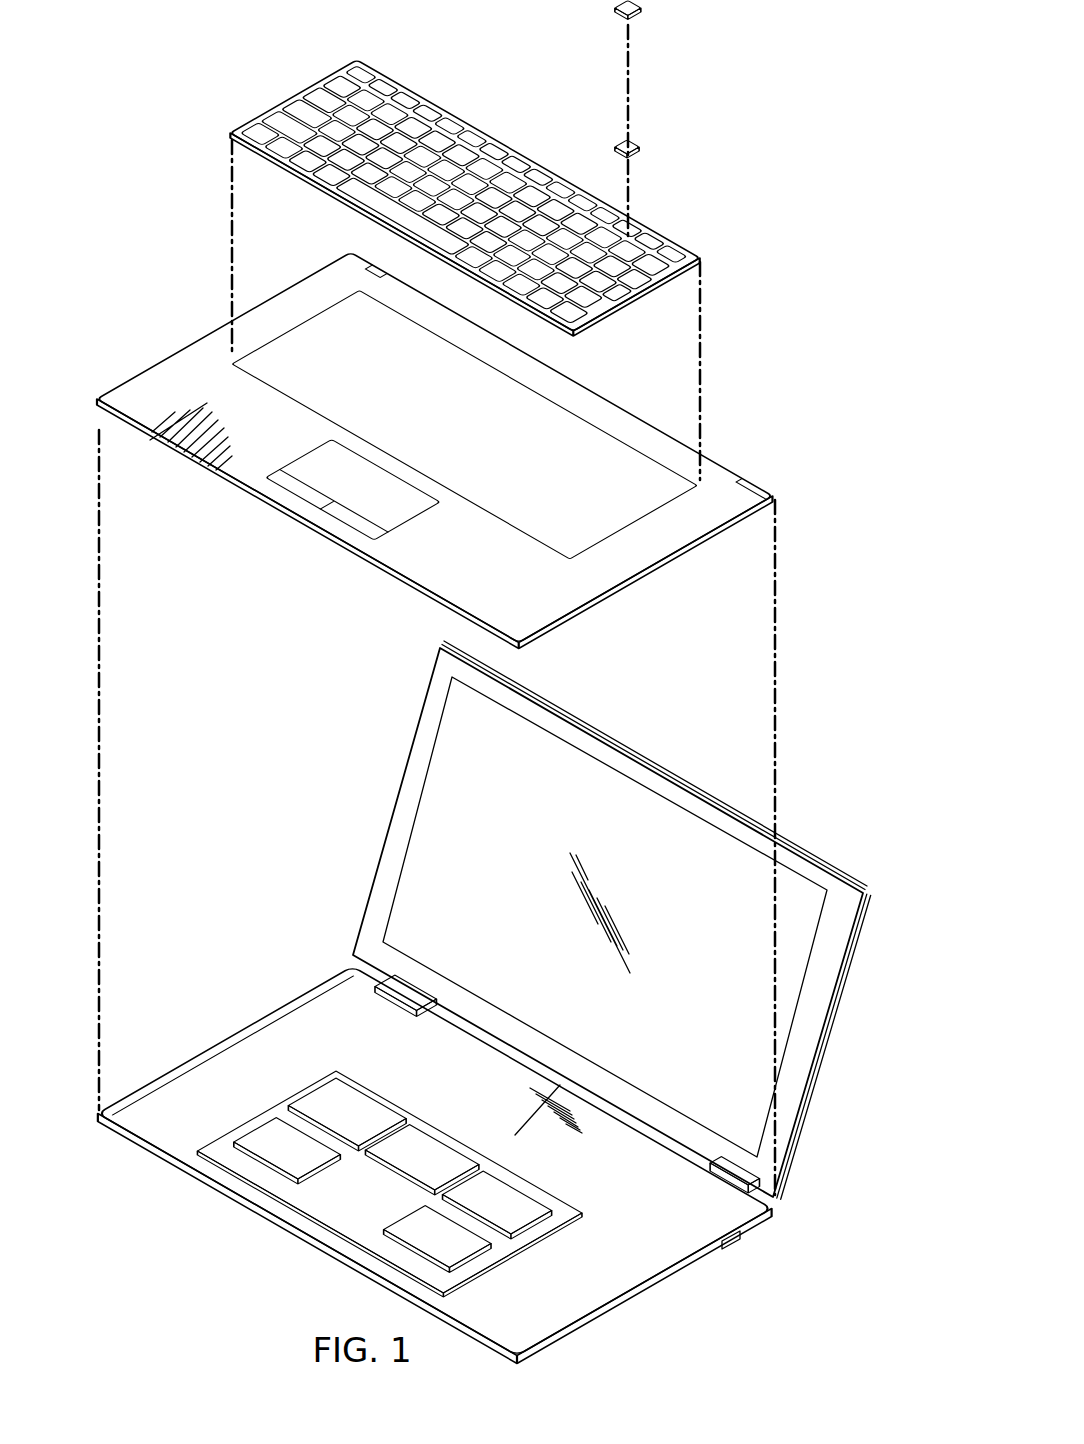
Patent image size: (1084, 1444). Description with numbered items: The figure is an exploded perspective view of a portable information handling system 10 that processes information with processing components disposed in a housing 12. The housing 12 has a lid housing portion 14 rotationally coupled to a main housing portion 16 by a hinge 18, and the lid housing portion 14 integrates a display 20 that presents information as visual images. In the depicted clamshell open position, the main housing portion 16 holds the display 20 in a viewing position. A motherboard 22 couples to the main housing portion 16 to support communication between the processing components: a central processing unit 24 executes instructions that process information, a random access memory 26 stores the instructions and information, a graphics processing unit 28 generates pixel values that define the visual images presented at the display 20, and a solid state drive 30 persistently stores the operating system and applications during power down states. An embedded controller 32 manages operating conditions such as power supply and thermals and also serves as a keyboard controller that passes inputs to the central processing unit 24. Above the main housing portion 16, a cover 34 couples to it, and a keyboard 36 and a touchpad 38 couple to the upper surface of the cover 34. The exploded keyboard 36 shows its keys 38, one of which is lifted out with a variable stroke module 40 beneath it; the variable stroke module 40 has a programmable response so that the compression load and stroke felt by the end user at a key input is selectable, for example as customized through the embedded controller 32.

The portable information handling system 10 is at (838, 135).
The housing 12 is at (699, 1267).
The lid housing portion 14 is at (370, 870).
The main housing portion 16 is at (152, 1158).
The hinge 18 is at (730, 1180).
The display 20 is at (617, 788).
The motherboard 22 is at (343, 1208).
The central processing unit 24 is at (322, 1098).
The random access memory 26 is at (258, 1132).
The graphics processing unit 28 is at (412, 1130).
The solid state drive 30 is at (468, 1247).
The embedded controller 32 is at (525, 1215).
The cover 34 is at (150, 375).
The keyboard 36 is at (307, 93).
The key 38 is at (317, 574).
The variable stroke module 40 is at (640, 147).